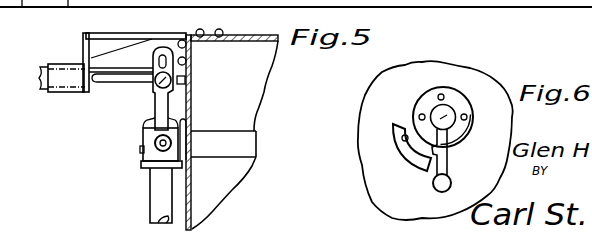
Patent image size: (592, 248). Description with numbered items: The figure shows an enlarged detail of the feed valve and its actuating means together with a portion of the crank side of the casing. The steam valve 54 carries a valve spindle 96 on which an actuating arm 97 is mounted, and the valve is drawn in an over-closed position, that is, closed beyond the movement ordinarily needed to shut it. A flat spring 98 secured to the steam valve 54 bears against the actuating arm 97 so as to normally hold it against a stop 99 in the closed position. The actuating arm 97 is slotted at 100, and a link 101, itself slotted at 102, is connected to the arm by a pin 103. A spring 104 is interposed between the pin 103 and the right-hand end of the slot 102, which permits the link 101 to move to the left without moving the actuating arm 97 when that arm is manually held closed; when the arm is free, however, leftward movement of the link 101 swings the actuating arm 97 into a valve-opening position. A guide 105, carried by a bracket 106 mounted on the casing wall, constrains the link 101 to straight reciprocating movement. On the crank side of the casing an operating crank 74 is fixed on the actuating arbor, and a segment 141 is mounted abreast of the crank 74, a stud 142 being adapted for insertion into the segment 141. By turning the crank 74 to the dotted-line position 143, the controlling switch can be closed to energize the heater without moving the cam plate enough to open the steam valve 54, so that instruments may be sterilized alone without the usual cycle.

In FIG. 5, the steam valve 54 is at (155, 157).
In FIG. 6, the crank 74 is at (446, 160).
In FIG. 5, the valve spindle 96 is at (197, 131).
In FIG. 5, the actuating arm 97 is at (153, 119).
In FIG. 5, the flat spring 98 is at (156, 132).
In FIG. 5, the stop 99 is at (172, 115).
In FIG. 5, the slot 100 is at (194, 56).
In FIG. 5, the link 101 is at (43, 85).
In FIG. 5, the slot 102 is at (112, 78).
In FIG. 5, the pin 103 is at (158, 84).
In FIG. 5, the spring 104 is at (186, 78).
In FIG. 5, the guide 105 is at (69, 55).
In FIG. 5, the bracket 106 is at (140, 24).
In FIG. 6, the segment 141 is at (414, 152).
In FIG. 6, the stud 142 is at (392, 134).
In FIG. 6, the dotted line position 143 is at (399, 140).